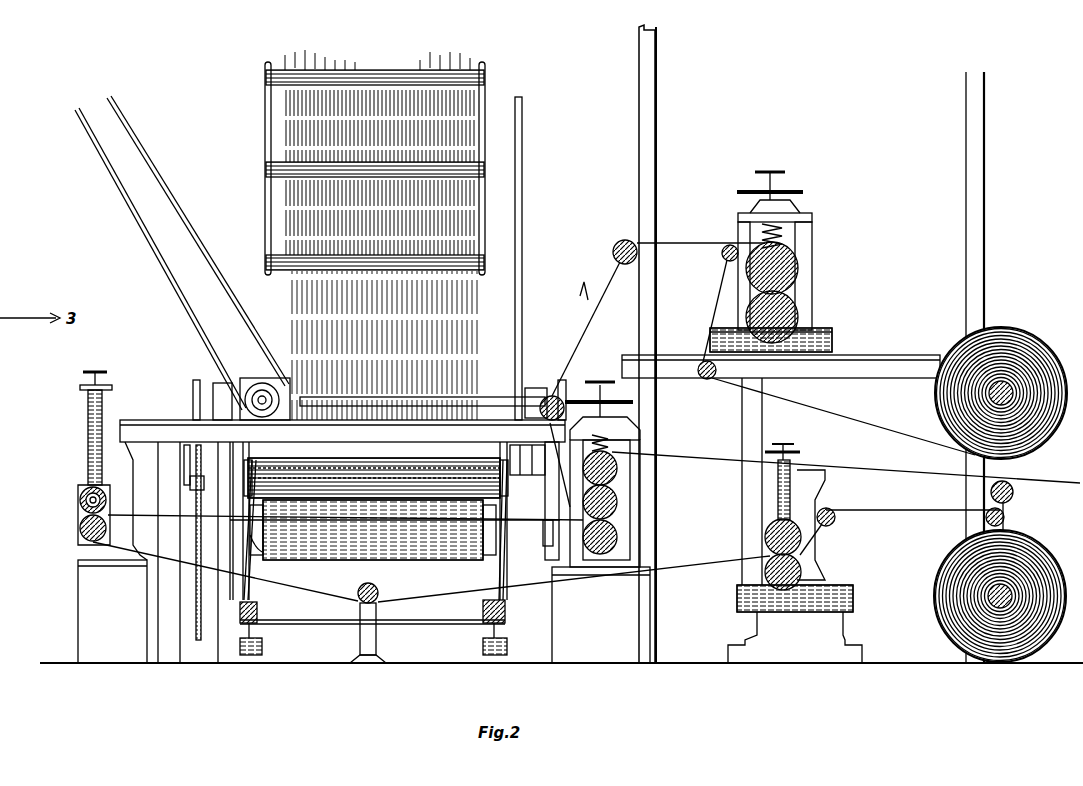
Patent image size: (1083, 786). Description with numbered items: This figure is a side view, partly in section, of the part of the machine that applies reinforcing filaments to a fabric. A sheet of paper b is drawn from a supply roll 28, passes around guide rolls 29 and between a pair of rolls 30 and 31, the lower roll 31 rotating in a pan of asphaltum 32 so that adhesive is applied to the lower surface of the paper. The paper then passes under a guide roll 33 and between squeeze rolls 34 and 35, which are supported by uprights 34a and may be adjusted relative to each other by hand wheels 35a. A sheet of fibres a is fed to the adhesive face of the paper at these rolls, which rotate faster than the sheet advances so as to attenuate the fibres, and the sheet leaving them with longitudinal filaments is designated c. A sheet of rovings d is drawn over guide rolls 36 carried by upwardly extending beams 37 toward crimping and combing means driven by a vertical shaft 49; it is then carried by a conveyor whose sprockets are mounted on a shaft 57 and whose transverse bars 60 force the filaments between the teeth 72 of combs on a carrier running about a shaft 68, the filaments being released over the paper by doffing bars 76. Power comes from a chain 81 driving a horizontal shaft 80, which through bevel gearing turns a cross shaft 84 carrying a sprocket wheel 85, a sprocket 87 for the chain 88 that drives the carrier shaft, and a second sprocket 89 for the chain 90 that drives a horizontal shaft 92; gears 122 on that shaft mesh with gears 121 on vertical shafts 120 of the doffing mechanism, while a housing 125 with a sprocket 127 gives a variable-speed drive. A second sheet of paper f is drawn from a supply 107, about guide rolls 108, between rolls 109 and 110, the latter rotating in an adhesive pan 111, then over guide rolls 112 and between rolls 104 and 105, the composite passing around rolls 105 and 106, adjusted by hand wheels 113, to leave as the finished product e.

The supply roll 28 is at (942, 556).
The guide rolls 29 is at (836, 520).
The roll 30 is at (766, 535).
The roll 31 is at (768, 572).
The pan of asphaltum 32 is at (853, 597).
The guide roll 33 is at (358, 592).
The squeeze roll 34 is at (80, 530).
The uprights 34a is at (82, 590).
The squeeze roll 35 is at (80, 495).
The hand wheels 35a is at (118, 386).
The guide rolls 36 is at (279, 70).
The upwardly extending beams 37 is at (487, 103).
The vertical shaft 49 is at (523, 147).
The shaft 57 is at (258, 555).
The bars 60 is at (418, 560).
The shaft 68 is at (190, 483).
The teeth 72 is at (416, 458).
The doffing bars 76 is at (350, 458).
The horizontally extending shaft 80 is at (258, 388).
The sprocket chain 81 is at (140, 230).
The shaft 84 is at (496, 397).
The sprocket wheel 85 is at (565, 380).
The sprocket 87 is at (193, 392).
The chain 88 is at (184, 453).
The second sprocket 89 is at (215, 386).
The chain 90 is at (196, 583).
The second shaft 92 is at (310, 626).
The roll 104 is at (618, 534).
The roll 105 is at (618, 500).
The third roll 106 is at (618, 465).
The source of supply 107 is at (1010, 326).
The guide rolls 108 is at (722, 257).
The roll 109 is at (798, 270).
The roll 110 is at (795, 315).
The pan 111 is at (832, 343).
The guide rolls 112 is at (552, 396).
The hand wheels 113 is at (612, 392).
The vertical shafts 120 is at (375, 530).
The gears 121 is at (257, 610).
The gears 122 is at (256, 640).
The housing 125 is at (538, 548).
The sprocket 127 is at (569, 466).
The sheet of fibres a is at (80, 512).
The sheet of paper b is at (585, 578).
The sheet c is at (288, 561).
The sheet of rovings d is at (282, 108).
The finished product e is at (846, 462).
The second sheet of paper f is at (763, 336).